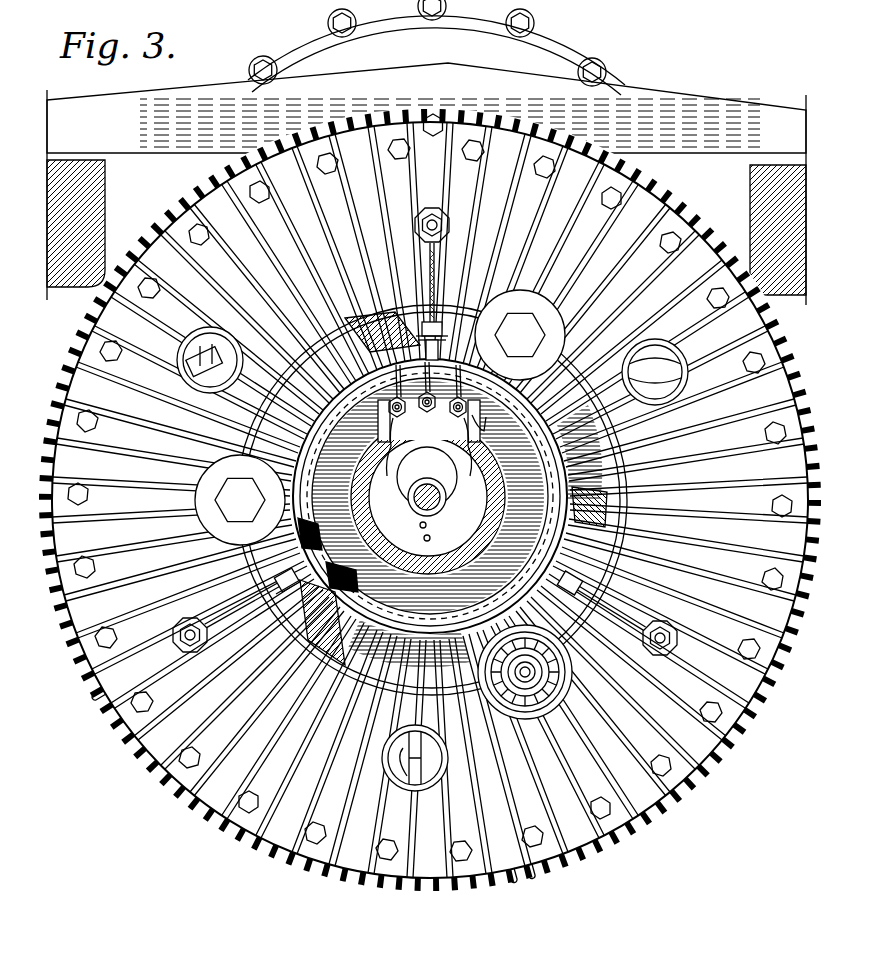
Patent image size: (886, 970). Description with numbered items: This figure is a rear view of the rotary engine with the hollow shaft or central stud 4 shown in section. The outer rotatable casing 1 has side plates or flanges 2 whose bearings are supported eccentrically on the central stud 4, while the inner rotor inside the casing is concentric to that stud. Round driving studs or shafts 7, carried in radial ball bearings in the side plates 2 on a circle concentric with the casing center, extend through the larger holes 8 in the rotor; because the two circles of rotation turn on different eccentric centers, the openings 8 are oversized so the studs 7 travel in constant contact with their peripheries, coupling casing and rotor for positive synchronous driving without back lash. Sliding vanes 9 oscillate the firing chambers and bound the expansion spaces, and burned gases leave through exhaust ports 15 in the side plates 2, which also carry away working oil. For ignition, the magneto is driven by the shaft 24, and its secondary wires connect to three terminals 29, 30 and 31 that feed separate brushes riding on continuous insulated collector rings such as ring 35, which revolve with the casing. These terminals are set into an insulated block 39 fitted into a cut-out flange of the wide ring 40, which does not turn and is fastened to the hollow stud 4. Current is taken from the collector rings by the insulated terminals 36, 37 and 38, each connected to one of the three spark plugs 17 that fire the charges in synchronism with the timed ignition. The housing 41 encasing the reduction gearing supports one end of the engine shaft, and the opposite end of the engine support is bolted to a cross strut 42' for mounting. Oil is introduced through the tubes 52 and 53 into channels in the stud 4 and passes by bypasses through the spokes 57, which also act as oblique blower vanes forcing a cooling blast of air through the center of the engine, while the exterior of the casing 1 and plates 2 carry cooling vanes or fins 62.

The rotatable casing 1 is at (192, 810).
The side plates or flanges 2 is at (575, 830).
The hollow shaft or central stud 4 is at (400, 556).
The driving studs or shafts 7 is at (538, 306).
The holes or openings 8 is at (246, 448).
The vanes 9 is at (212, 340).
The exhaust port 15 is at (192, 374).
The spark plugs 17 is at (446, 216).
The shaft 24 is at (434, 503).
The terminal 29 is at (390, 436).
The terminal 30 is at (427, 420).
The terminal 31 is at (469, 436).
The collector ring 35 is at (332, 565).
The insulated terminal 36 is at (438, 324).
The insulated terminal 37 is at (286, 590).
The insulated terminal 38 is at (578, 582).
The insulated block 39 is at (473, 422).
The ring 40 is at (512, 490).
The housing 41 is at (528, 60).
The strut 42' is at (426, 175).
The oil tube 52 is at (411, 525).
The oil tube 53 is at (441, 541).
The spokes or oblique vanes 57 is at (324, 378).
The cooling vanes or fins 62 is at (516, 878).